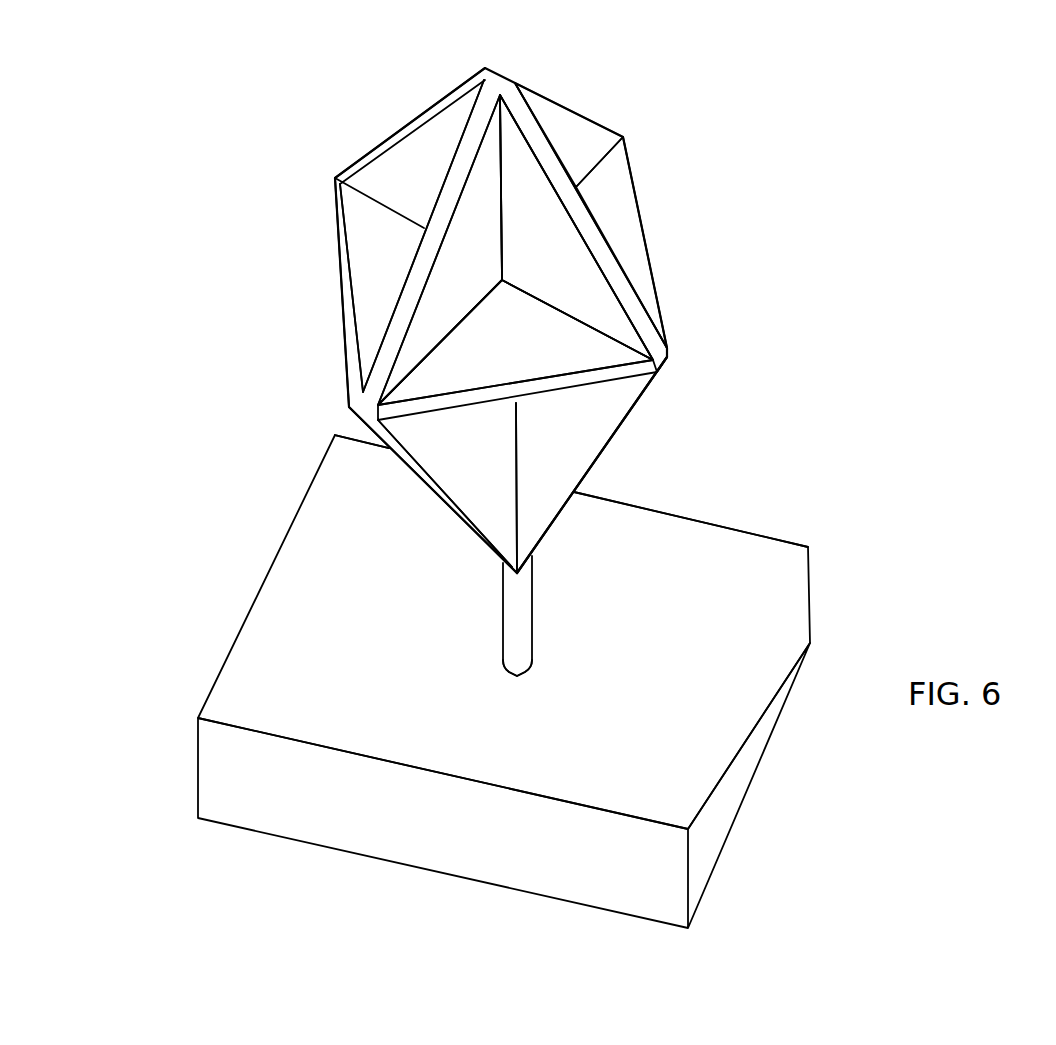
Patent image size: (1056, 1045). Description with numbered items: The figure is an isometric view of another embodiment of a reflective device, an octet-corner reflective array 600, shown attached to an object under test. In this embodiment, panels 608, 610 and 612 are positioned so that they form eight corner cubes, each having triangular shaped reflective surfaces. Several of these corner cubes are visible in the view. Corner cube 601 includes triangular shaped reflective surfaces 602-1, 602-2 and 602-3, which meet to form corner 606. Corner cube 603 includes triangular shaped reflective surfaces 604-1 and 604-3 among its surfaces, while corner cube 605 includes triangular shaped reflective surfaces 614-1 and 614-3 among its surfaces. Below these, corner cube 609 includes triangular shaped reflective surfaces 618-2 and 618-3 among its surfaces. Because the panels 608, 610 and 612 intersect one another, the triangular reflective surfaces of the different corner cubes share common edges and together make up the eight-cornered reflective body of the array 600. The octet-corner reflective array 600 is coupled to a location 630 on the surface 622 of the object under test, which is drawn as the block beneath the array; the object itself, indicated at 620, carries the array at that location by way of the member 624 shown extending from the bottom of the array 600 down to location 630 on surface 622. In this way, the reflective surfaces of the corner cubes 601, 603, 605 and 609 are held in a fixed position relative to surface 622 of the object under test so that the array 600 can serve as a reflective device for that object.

The octet-corner reflective array 600 is at (697, 143).
The corner cube 601 is at (438, 377).
The triangular shaped reflective surface 602-1 is at (511, 355).
The triangular shaped reflective surface 602-2 is at (497, 269).
The triangular shaped reflective surface 602-3 is at (581, 269).
The corner cube 603 is at (361, 299).
The triangular shaped reflective surface 604-1 is at (399, 269).
The triangular shaped reflective surface 604-3 is at (427, 185).
The corner cube 605 is at (629, 242).
The corner 606 is at (502, 281).
The panel 608 is at (598, 378).
The corner cube 609 is at (539, 505).
The panel 610 is at (558, 162).
The panel 612 is at (473, 137).
The triangular shaped reflective surface 614-1 is at (610, 207).
The triangular shaped reflective surface 614-3 is at (555, 123).
The triangular shaped reflective surface 618-2 is at (497, 470).
The triangular shaped reflective surface 618-3 is at (582, 470).
The base 620 is at (808, 522).
The surface 622 is at (677, 665).
The pin 624 is at (518, 603).
The location 630 is at (517, 676).